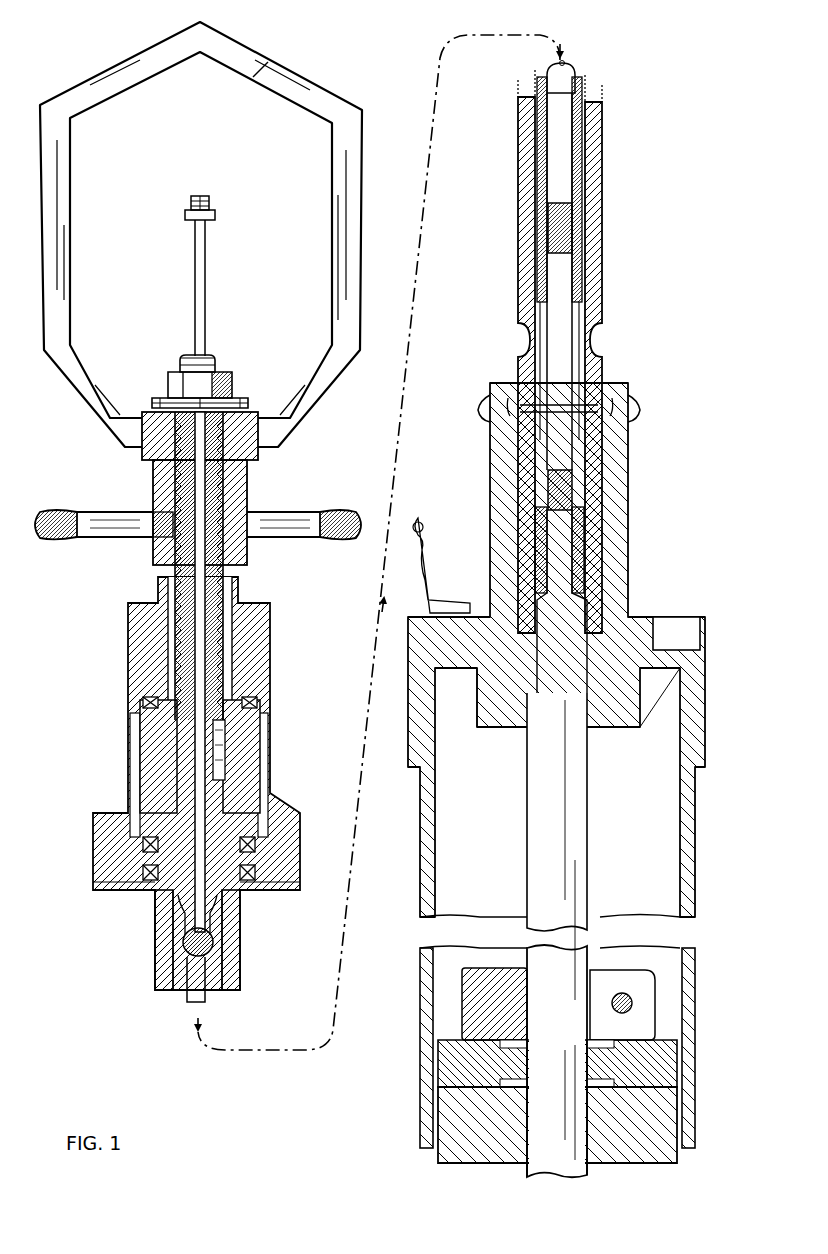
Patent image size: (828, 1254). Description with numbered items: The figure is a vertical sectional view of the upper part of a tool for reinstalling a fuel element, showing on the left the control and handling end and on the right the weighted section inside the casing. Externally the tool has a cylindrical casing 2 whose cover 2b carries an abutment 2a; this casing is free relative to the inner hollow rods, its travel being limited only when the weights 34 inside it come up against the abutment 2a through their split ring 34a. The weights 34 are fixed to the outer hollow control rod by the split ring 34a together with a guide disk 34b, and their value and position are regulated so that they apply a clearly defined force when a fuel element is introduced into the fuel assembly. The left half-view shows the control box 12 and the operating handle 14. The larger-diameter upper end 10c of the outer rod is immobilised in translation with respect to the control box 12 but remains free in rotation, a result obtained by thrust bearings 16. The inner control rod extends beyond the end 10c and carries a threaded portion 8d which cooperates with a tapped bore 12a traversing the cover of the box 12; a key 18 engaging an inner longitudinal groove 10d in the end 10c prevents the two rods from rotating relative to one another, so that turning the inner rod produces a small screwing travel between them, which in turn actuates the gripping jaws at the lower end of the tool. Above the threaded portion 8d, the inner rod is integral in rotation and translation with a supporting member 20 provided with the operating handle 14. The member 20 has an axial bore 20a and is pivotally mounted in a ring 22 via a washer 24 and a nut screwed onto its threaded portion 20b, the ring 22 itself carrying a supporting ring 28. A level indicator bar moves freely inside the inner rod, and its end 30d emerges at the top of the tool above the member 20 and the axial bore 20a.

The cylindrical casing 2 is at (657, 604).
The abutment 2a is at (490, 730).
The cover 2b is at (625, 650).
The threaded portion 8d is at (177, 587).
The upper end of rod 10b 10c is at (153, 762).
The inner longitudinal groove 10d is at (240, 677).
The control box 12 is at (265, 610).
The tapped bore 12a is at (210, 647).
The operating handle 14 is at (277, 518).
The thrust bearings 16 is at (148, 700).
The key 18 is at (220, 755).
The supporting member 20 is at (163, 477).
The axial bore 20a is at (232, 387).
The threaded portion of member 20 20b is at (214, 362).
The ring 22 is at (135, 405).
The washer 24 is at (155, 405).
The supporting ring 28 is at (263, 70).
The spindle end 30d is at (183, 190).
The weights 34 is at (477, 1117).
The split ring 34a is at (607, 983).
The guide disk 34b is at (477, 1060).